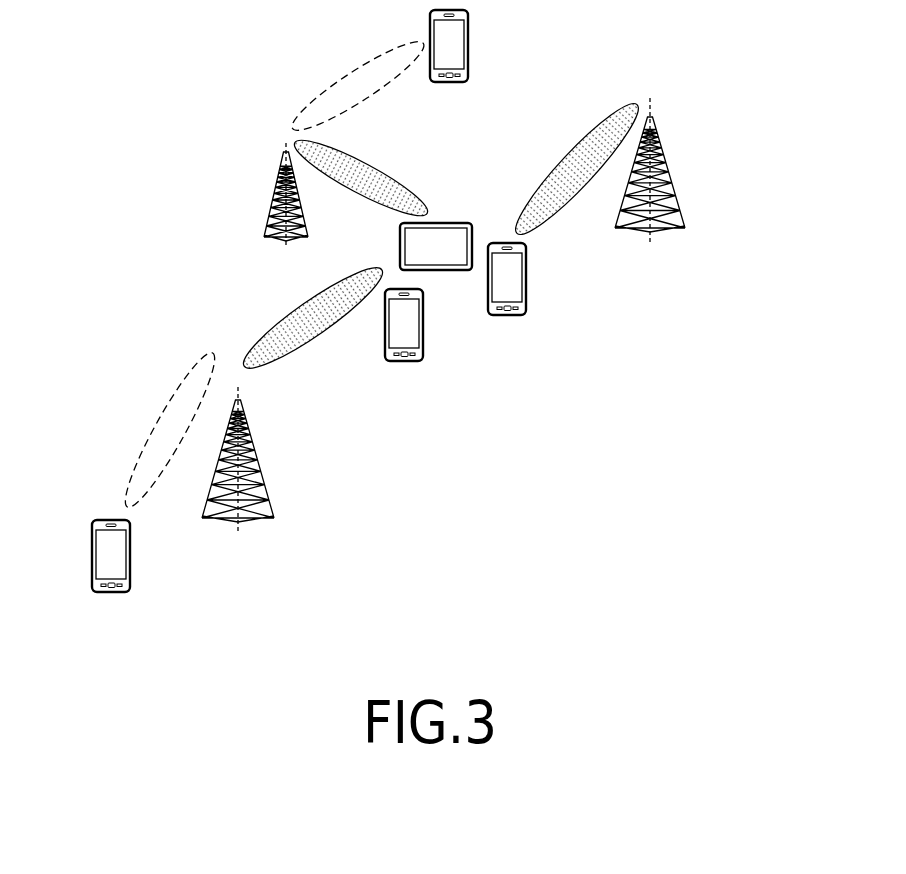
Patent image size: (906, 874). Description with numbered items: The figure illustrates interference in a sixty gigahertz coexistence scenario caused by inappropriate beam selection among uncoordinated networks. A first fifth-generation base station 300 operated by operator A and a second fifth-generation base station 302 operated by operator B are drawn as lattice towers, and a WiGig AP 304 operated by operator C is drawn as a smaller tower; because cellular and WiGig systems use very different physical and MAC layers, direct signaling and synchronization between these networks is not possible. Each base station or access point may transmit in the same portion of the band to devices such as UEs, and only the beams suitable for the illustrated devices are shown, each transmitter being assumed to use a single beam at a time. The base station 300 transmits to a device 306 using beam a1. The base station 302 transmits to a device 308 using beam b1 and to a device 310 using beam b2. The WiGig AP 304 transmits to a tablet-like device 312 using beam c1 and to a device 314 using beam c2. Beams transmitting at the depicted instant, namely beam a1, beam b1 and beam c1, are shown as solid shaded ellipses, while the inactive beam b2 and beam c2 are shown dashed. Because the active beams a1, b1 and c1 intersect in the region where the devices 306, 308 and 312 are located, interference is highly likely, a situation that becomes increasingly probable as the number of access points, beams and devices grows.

The first 5G base station 300 is at (662, 165).
The second 5G base station 302 is at (256, 455).
The WiGig AP 304 is at (302, 203).
The device 306 is at (527, 275).
The device 308 is at (424, 324).
The device 310 is at (90, 561).
The device 312 is at (446, 222).
The device 314 is at (469, 44).
The beam a1 is at (566, 155).
The beam b1 is at (292, 322).
The beam b2 is at (158, 418).
The beam c1 is at (372, 170).
The beam c2 is at (340, 80).